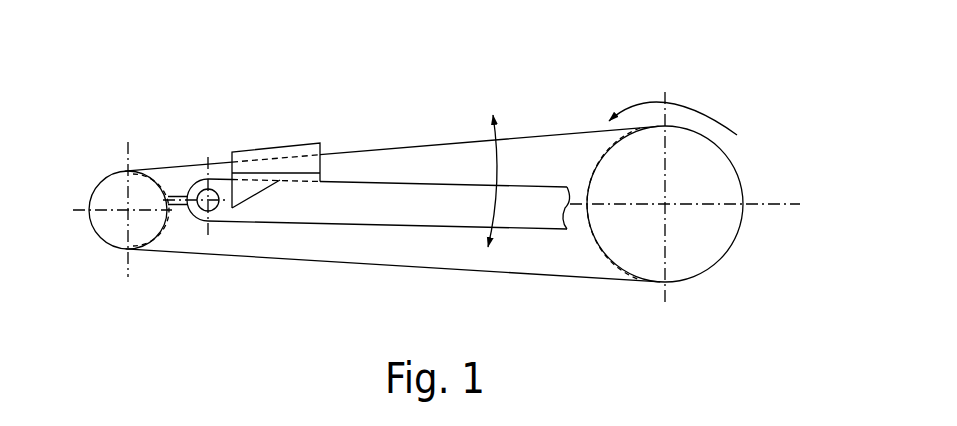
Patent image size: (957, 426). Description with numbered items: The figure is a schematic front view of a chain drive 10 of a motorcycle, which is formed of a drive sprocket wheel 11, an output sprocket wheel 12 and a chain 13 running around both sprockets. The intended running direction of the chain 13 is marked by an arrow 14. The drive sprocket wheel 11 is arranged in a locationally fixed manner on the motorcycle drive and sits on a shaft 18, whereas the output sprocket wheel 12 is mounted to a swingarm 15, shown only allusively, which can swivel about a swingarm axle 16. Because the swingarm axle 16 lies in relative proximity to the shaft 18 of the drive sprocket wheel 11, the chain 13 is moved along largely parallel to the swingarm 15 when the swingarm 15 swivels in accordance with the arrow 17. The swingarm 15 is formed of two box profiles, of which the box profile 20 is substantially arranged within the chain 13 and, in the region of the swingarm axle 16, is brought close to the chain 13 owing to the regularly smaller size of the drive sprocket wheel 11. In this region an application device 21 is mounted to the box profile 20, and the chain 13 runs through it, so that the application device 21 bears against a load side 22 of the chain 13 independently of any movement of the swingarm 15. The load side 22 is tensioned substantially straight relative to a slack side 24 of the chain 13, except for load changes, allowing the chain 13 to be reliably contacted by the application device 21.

The chain drive 10 is at (639, 74).
The drive sprocket wheel 11 is at (108, 184).
The output sprocket wheel 12 is at (748, 183).
The chain 13 is at (393, 213).
The arrow 14 is at (673, 110).
The swingarm 15 is at (388, 181).
The swingarm axle 16 is at (204, 190).
The arrow 17 is at (511, 181).
The shaft 18 is at (123, 215).
The box profile 20 is at (315, 205).
The application device 21 is at (268, 143).
The load side 22 is at (423, 145).
The slack side 24 is at (380, 265).